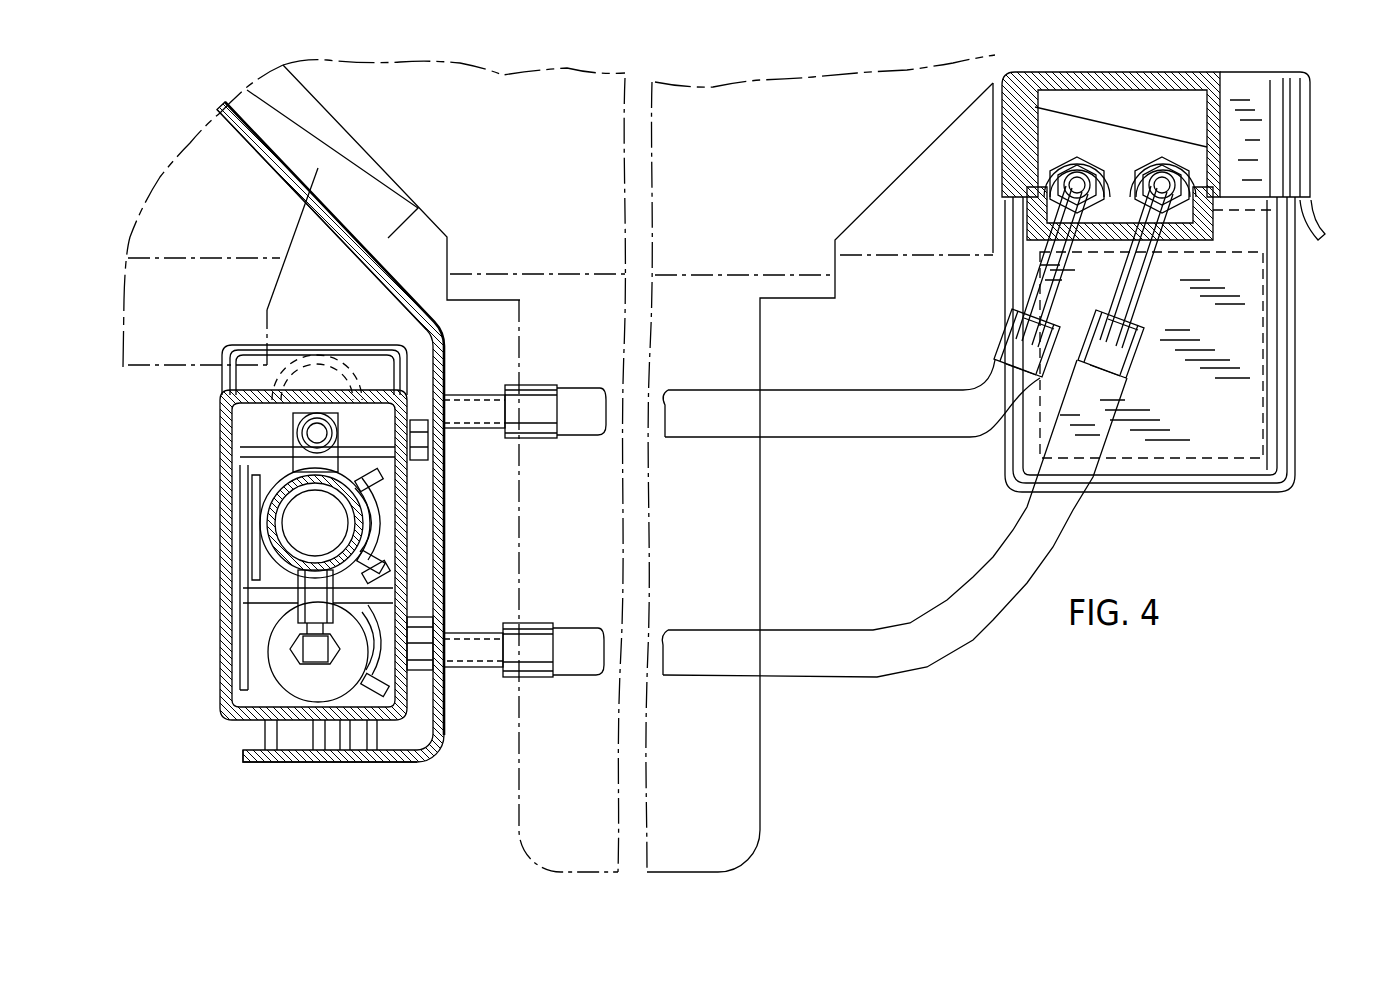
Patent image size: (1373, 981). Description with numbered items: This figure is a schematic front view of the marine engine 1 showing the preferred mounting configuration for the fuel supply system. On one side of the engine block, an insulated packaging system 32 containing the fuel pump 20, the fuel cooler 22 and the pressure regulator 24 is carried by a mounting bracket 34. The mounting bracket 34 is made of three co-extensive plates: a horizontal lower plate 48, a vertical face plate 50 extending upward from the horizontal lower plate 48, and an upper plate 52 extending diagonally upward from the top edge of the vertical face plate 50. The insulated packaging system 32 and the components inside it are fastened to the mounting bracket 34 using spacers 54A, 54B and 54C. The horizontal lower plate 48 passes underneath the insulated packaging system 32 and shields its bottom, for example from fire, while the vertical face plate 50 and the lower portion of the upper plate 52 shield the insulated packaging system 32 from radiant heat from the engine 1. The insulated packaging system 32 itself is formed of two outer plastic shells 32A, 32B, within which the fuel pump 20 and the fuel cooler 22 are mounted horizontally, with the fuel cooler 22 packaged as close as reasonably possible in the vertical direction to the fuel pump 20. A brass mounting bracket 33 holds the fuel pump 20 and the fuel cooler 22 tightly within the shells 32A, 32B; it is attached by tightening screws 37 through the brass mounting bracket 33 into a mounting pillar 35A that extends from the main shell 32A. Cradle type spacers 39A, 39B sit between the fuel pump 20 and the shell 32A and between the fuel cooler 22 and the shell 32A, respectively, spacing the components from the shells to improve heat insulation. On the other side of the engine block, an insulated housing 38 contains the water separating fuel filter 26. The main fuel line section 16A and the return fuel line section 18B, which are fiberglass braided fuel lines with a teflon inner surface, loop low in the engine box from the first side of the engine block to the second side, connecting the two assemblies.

The engine 1 is at (498, 97).
The main fuel line section 16A is at (780, 630).
The return fuel line section 18B is at (772, 390).
The fuel pump 20 is at (278, 677).
The fuel cooler 22 is at (254, 528).
The pressure regulator 24 is at (330, 370).
The water separating fuel filter 26 is at (1262, 367).
The insulated packaging system 32 is at (288, 362).
The main shell 32A is at (370, 390).
The outer plastic shell 32B is at (221, 434).
The brass mounting bracket 33 is at (223, 577).
The mounting bracket 34 is at (417, 293).
The mounting pillar 35A is at (288, 592).
The screws 37 is at (240, 607).
The insulated housing 38 is at (1305, 83).
The cradle type spacer 39A is at (395, 673).
The cradle type spacer 39B is at (390, 528).
The horizontal lower plate 48 is at (342, 762).
The vertical face plate 50 is at (444, 547).
The upper plate 52 is at (388, 268).
The spacer 54A is at (262, 735).
The spacer 54B is at (415, 617).
The spacer 54C is at (418, 478).